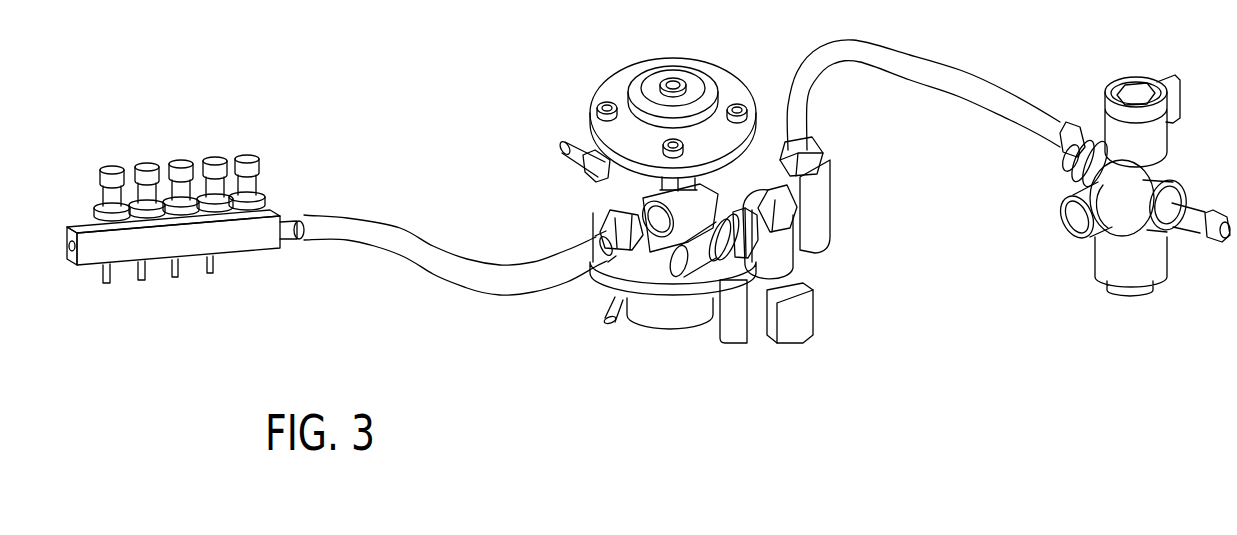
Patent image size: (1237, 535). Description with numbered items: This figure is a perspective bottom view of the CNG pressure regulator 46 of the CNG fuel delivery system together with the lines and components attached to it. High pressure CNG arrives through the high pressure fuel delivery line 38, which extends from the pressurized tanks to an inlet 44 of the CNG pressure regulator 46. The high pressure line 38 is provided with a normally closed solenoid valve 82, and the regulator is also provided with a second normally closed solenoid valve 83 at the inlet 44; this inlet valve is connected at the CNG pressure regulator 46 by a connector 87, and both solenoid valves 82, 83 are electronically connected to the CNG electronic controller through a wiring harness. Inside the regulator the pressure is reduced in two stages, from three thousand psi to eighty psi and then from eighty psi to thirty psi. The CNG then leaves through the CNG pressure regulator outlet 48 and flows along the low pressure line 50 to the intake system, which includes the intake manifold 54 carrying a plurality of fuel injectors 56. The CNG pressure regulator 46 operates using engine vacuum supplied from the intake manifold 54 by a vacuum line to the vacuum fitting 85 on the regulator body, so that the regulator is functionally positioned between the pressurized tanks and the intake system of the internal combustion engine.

The high pressure fuel delivery line 38 is at (953, 80).
The inlet 44 is at (827, 153).
The CNG pressure regulator 46 is at (667, 322).
The CNG pressure regulator outlet 48 is at (595, 243).
The low pressure line 50 is at (412, 250).
The intake manifold 54 is at (270, 228).
The fuel injectors 56 is at (247, 170).
The normally closed solenoid valve 82 is at (1122, 257).
The normally closed solenoid valve 83 is at (777, 262).
The vacuum fitting 85 is at (610, 323).
The connector 87 is at (666, 262).